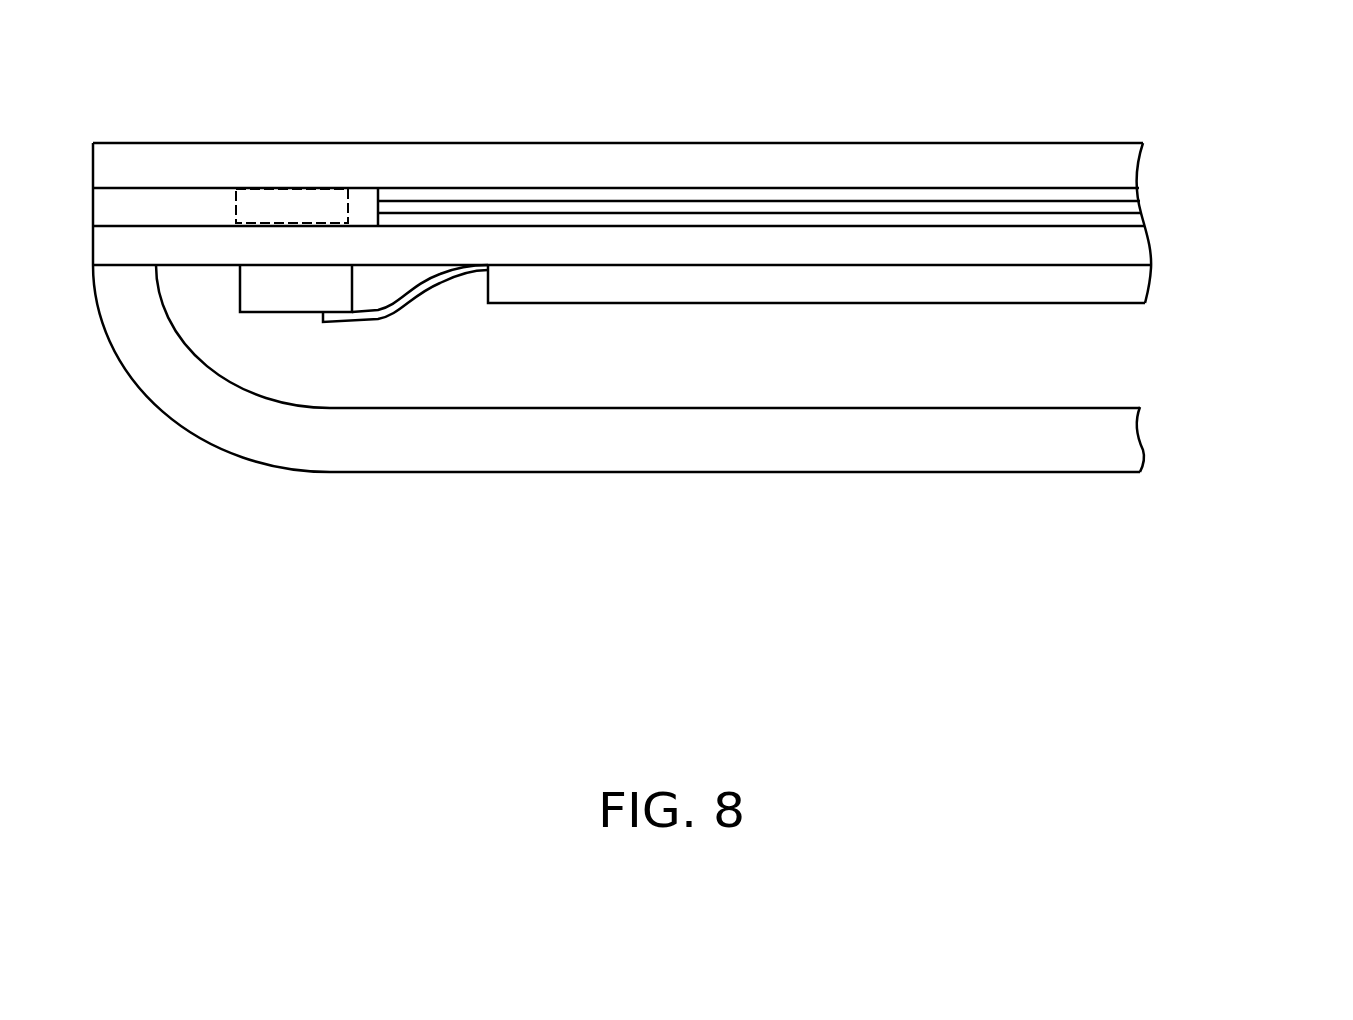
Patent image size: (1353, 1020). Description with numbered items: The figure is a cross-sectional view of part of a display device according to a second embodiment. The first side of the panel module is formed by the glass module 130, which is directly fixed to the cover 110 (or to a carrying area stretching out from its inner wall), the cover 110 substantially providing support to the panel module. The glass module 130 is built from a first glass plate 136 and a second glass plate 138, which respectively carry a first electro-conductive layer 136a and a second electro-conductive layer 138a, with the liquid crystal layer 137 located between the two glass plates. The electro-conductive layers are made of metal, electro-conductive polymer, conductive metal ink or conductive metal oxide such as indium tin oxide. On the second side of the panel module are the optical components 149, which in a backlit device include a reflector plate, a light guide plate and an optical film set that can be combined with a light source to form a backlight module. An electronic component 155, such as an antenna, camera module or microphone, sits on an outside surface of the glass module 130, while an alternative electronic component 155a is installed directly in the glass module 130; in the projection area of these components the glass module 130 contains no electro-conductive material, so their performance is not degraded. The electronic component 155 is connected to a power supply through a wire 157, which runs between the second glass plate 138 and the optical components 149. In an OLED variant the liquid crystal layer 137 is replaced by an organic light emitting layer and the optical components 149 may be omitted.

The cover 110 is at (567, 438).
The glass module 130 is at (1293, 122).
The first glass plate 136 is at (1123, 154).
The first electro-conductive layer 136a is at (1123, 194).
The liquid crystal layer 137 is at (1123, 207).
The second glass plate 138 is at (1123, 257).
The second electro-conductive layer 138a is at (1123, 219).
The optical components 149 is at (1123, 290).
The electronic component 155 is at (297, 288).
The electronic component 155a is at (283, 187).
The wire 157 is at (410, 292).